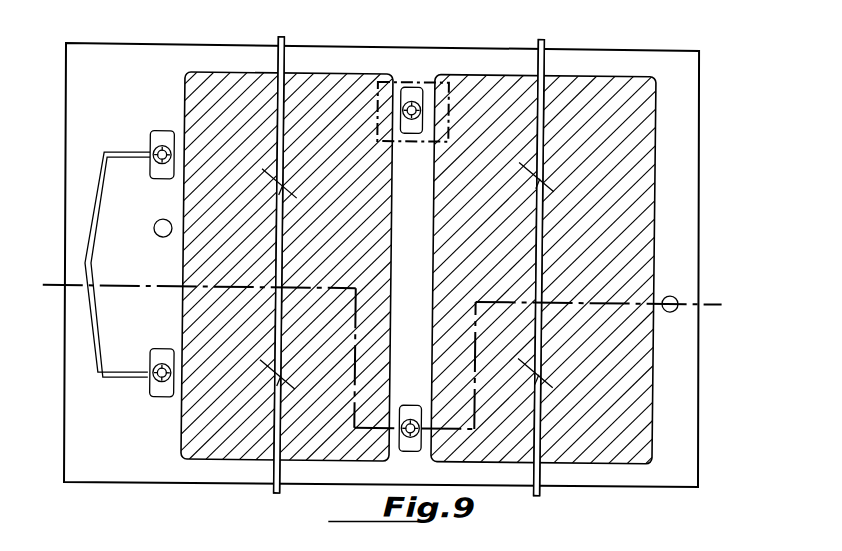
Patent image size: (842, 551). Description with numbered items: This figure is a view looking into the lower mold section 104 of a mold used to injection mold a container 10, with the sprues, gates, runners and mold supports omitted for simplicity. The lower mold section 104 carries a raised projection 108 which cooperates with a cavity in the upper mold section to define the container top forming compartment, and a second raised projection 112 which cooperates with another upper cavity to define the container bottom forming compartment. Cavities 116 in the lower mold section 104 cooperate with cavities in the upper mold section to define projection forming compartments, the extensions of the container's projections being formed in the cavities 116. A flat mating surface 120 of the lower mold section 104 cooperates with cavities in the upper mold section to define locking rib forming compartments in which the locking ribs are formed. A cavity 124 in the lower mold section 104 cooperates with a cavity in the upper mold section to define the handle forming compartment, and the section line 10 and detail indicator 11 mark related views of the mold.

The lower mold section 104 is at (168, 47).
The raised projection 108 is at (646, 120).
The raised projection 112 is at (188, 89).
The cavity 116 is at (156, 224).
The flat mating surface 120 is at (682, 196).
The cavity 124 is at (118, 155).
The container 10 is at (53, 300).
The detail view 11 is at (446, 141).